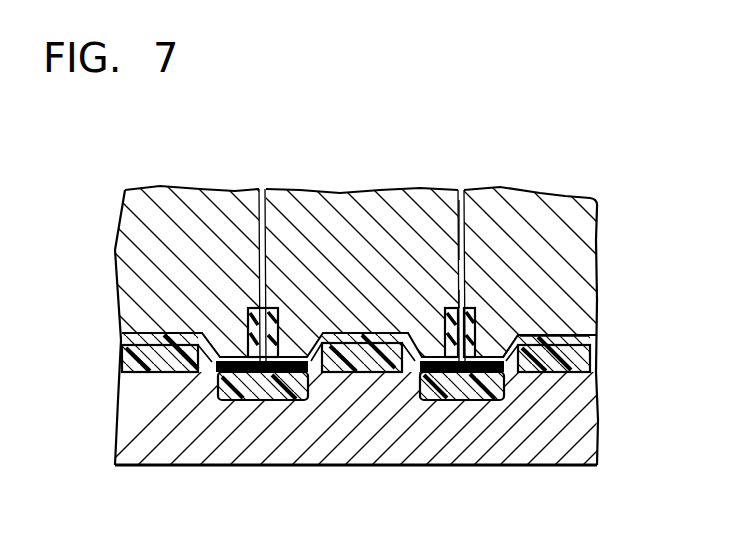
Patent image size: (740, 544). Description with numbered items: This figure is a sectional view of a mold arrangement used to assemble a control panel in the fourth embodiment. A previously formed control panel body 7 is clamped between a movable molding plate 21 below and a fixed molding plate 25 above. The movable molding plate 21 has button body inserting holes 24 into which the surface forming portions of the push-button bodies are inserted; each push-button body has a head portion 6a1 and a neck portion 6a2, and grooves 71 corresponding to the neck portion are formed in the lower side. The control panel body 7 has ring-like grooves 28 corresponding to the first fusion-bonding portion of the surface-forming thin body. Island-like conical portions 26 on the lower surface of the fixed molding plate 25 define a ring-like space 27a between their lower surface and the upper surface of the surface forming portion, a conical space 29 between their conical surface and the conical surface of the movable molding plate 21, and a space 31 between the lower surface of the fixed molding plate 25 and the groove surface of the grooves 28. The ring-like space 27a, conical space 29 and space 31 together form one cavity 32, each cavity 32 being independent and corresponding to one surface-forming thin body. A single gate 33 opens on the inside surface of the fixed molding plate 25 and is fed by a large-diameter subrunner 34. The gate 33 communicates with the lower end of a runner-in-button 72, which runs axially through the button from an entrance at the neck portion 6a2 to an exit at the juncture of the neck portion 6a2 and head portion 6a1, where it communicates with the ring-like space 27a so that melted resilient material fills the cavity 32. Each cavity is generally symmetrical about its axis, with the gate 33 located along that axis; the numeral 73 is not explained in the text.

The control panel body 7 is at (593, 362).
The movable molding plate 21 is at (583, 433).
The button body inserting holes 24 is at (480, 393).
The fixed molding plate 25 is at (586, 231).
The conical portions 26 is at (562, 372).
The ring-like space 27a is at (410, 412).
The ring-like grooves 28 is at (537, 348).
The conical space 29 is at (392, 372).
The space 31 is at (386, 328).
The cavity 32 is at (504, 366).
The gate 33 is at (457, 298).
The subrunners 34 is at (467, 213).
The grooves 71 is at (476, 320).
The runner-in-button 72 is at (444, 313).
The band under right pin 73 is at (425, 393).
The head portion 6a1 is at (423, 398).
The neck portion 6a2 is at (466, 305).